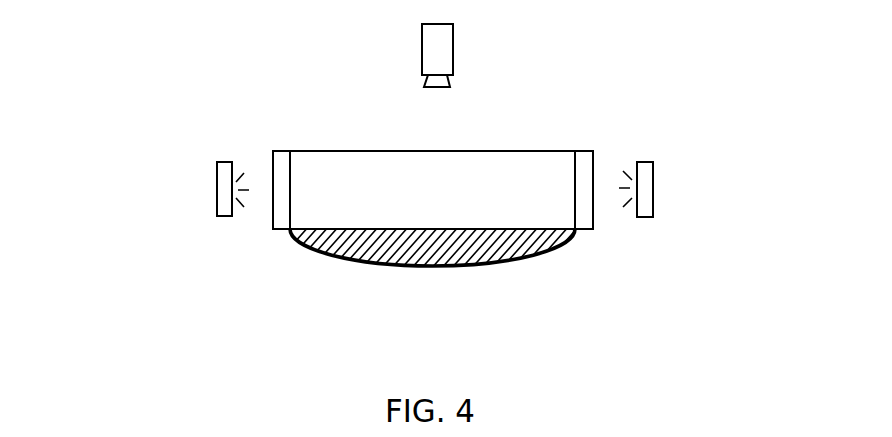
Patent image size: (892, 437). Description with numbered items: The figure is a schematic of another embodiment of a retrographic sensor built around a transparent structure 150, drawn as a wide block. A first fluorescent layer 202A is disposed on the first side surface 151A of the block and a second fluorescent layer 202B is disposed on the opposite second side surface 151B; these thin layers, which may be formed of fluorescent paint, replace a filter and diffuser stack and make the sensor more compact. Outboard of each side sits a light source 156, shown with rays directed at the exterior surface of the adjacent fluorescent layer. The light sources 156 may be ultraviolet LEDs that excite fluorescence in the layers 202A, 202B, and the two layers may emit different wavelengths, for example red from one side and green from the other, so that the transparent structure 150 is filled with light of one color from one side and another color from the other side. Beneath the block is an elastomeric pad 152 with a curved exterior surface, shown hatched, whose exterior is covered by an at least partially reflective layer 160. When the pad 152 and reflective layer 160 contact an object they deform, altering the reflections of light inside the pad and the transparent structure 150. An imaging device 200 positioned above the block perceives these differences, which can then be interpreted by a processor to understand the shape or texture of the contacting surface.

The transparent structure 150 is at (453, 168).
The first side surface 151A is at (288, 190).
The second side surface 151B is at (592, 190).
The elastomeric pad 152 is at (497, 246).
The light source 156 is at (217, 188).
The at least partially reflective layer 160 is at (336, 260).
The imaging device 200 is at (453, 48).
The first fluorescent layer 202A is at (285, 160).
The second fluorescent layer 202B is at (583, 160).